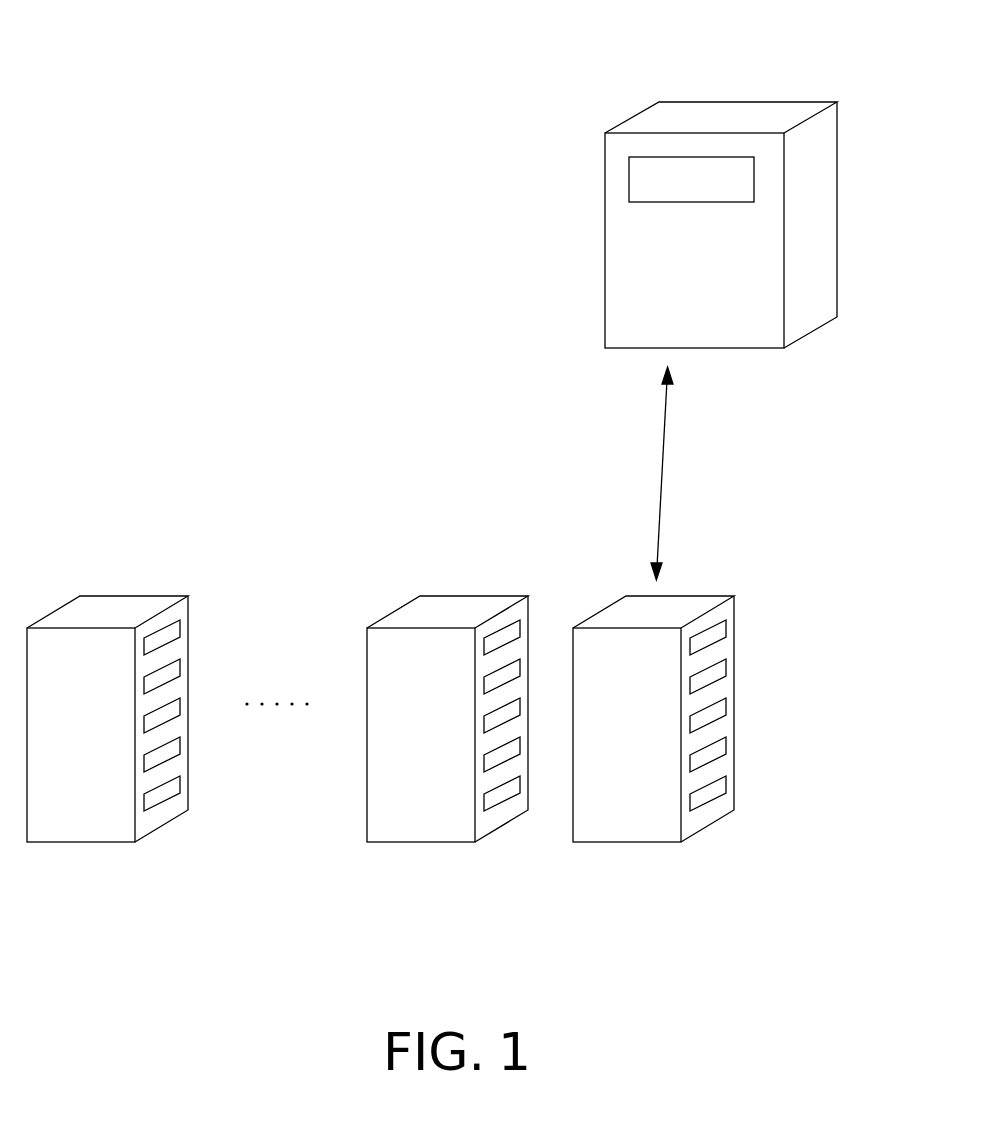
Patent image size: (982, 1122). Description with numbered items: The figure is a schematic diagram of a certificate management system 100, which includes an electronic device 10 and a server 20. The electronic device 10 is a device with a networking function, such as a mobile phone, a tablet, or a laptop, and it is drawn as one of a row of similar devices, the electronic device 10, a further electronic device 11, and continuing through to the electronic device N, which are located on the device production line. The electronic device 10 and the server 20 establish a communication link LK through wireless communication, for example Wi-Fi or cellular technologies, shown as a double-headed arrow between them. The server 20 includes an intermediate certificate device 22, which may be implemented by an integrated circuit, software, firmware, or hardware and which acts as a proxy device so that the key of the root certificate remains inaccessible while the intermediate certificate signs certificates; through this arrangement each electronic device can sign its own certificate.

The certificate management system 100 is at (117, 50).
The server 20 is at (730, 115).
The intermediate certificate device 22 is at (754, 180).
The communication link LK is at (640, 473).
The electronic device 10 is at (687, 607).
The second rack / host device 11 is at (453, 607).
The electronic device N is at (113, 607).